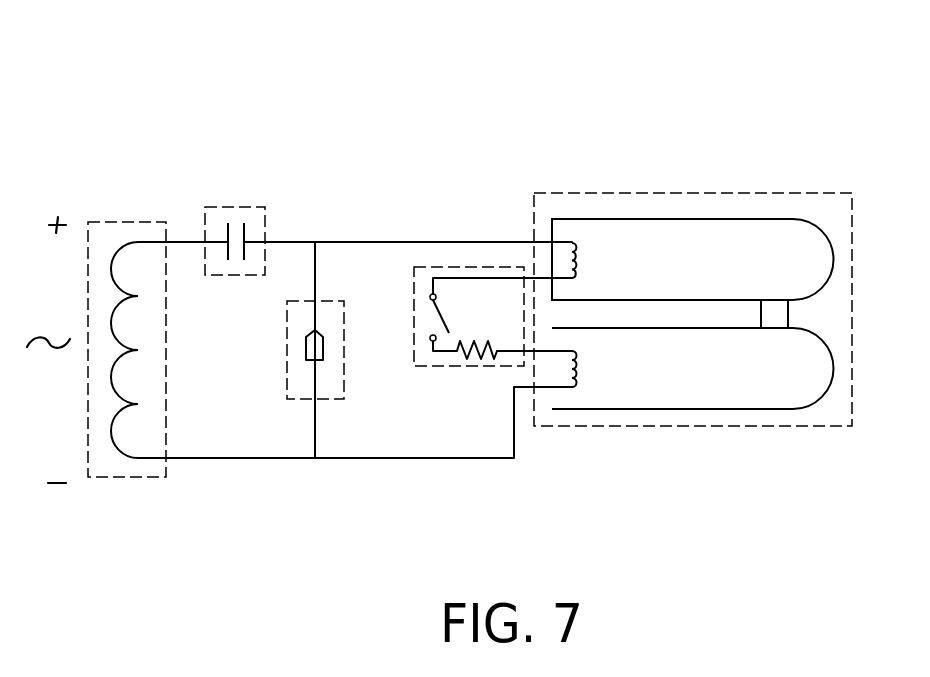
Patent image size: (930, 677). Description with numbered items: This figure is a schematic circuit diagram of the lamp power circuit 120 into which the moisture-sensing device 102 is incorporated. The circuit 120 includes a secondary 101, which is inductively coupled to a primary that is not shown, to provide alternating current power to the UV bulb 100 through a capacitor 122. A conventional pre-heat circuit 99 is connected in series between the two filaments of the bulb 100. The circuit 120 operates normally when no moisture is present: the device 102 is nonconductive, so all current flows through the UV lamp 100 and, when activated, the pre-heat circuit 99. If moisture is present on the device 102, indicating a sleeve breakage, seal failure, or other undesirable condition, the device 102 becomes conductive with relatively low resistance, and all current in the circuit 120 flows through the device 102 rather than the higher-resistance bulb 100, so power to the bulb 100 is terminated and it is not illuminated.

The power circuit 120 is at (462, 108).
The secondary 101 is at (118, 221).
The capacitor 122 is at (235, 207).
The device 102 is at (327, 301).
The pre-heat circuit 99 is at (456, 267).
The bulb 100 is at (682, 193).